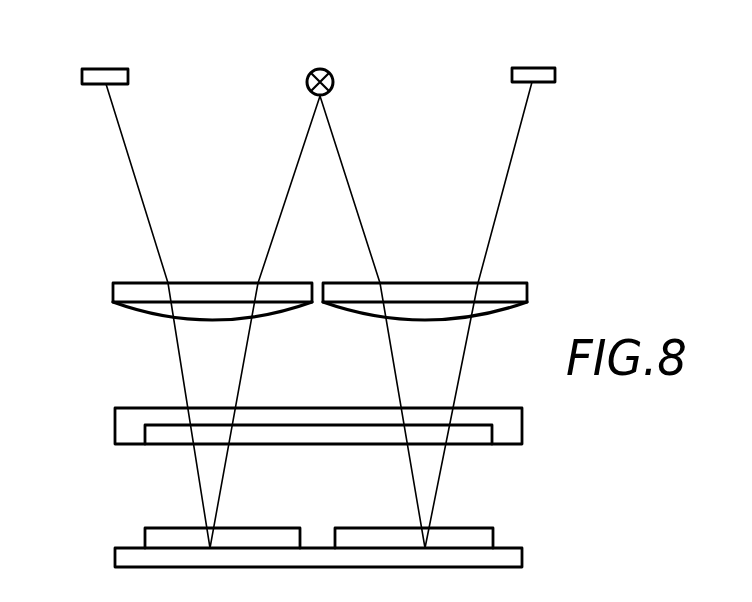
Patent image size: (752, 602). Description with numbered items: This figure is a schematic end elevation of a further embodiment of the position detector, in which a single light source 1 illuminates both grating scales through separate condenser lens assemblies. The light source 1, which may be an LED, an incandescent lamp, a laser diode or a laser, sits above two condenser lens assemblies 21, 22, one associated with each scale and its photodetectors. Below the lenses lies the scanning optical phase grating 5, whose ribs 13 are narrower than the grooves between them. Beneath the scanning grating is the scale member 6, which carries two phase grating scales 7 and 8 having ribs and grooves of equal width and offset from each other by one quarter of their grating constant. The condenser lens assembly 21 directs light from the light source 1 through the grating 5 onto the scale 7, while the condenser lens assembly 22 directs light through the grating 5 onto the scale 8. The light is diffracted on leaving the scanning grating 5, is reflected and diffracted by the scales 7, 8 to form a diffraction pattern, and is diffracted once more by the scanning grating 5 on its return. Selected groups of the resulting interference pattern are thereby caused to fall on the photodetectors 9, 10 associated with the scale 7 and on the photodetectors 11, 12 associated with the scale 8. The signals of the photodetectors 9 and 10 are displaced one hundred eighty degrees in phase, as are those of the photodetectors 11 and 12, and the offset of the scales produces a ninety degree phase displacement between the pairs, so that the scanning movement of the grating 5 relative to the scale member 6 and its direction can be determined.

The light source 1 is at (322, 66).
The scanning optical phase grating 5 is at (127, 423).
The scale member 6 is at (140, 555).
The phase grating scale 7 is at (170, 535).
The phase grating scale 8 is at (465, 533).
The photodetector 9 is at (85, 44).
The photodetector 10 is at (97, 68).
The photodetector 11 is at (563, 41).
The photodetector 12 is at (530, 68).
The ribs 13 is at (468, 433).
The condenser lens assembly 21 is at (147, 308).
The condenser lens assembly 22 is at (493, 288).